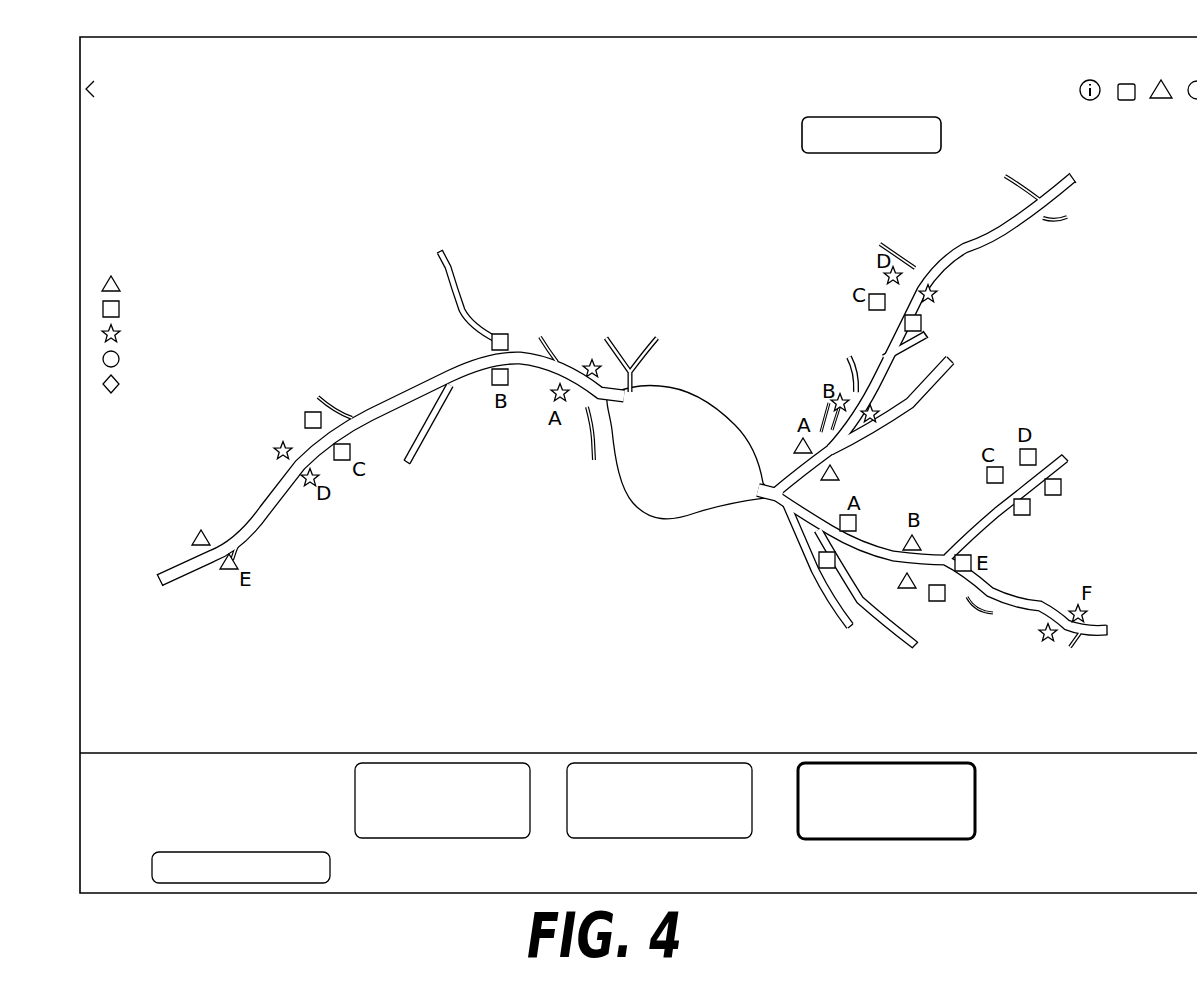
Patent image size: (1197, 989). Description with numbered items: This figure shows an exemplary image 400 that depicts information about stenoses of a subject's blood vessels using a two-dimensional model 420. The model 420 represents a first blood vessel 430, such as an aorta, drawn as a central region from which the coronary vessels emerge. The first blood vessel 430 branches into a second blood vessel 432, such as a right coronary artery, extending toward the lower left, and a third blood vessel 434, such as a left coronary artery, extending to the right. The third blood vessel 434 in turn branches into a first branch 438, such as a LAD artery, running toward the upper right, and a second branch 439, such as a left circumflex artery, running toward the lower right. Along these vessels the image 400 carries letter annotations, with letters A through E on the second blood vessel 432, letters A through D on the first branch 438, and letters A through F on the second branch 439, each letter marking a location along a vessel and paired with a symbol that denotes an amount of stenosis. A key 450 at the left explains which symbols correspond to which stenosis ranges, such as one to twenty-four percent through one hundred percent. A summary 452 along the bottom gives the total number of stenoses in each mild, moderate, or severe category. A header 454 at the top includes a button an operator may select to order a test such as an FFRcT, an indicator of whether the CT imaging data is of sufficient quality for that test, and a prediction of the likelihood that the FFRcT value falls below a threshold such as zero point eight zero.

The image 400 is at (262, 157).
The two-dimensional model 420 is at (416, 339).
The first blood vessel 430 is at (662, 437).
The second blood vessel 432 is at (558, 362).
The third blood vessel 434 is at (758, 482).
The first branch 438 is at (978, 243).
The second branch 439 is at (880, 553).
The key 450 is at (97, 224).
The summary 452 is at (352, 805).
The header 454 is at (503, 104).